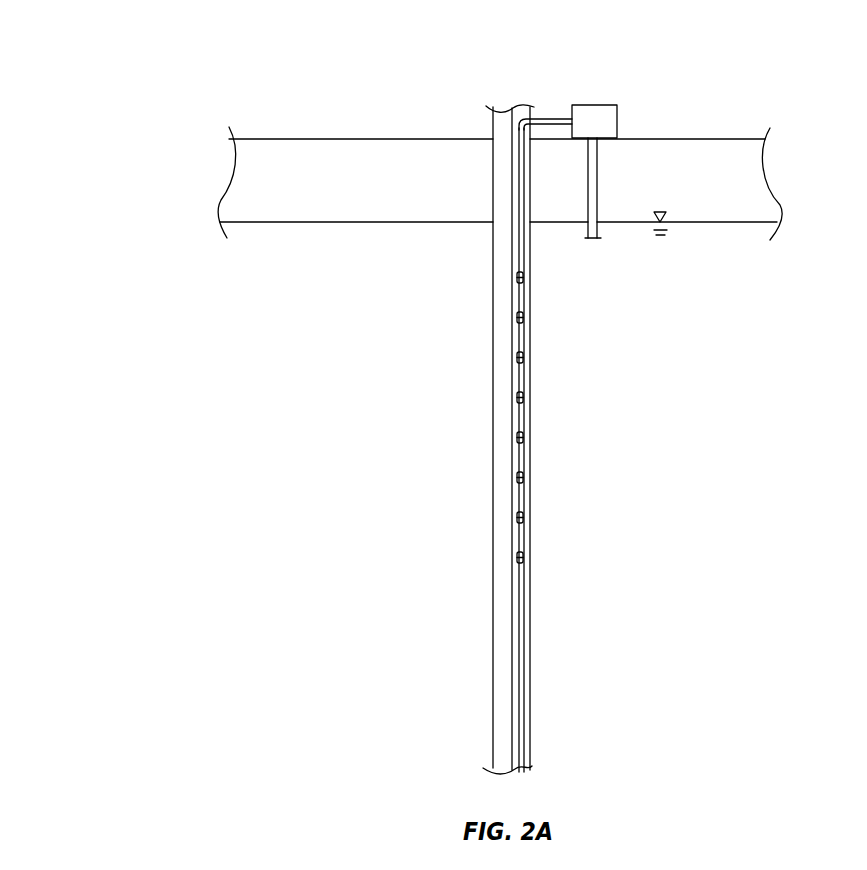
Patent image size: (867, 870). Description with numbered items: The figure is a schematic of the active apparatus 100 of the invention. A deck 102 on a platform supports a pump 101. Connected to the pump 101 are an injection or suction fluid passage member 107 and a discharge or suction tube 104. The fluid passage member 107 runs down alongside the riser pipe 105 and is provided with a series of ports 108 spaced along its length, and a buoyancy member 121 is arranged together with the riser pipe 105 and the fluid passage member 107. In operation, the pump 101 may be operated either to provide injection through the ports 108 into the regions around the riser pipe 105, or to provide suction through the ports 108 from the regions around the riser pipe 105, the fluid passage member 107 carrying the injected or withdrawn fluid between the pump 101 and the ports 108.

The active apparatus 100 is at (697, 45).
The pump 101 is at (617, 127).
The deck 102 is at (400, 152).
The discharge or suction tube 104 is at (600, 188).
The riser pipe 105 is at (517, 602).
The injection or suction fluid passage member 107 is at (538, 115).
The ports 108 is at (524, 278).
The buoyancy member 121 is at (502, 675).